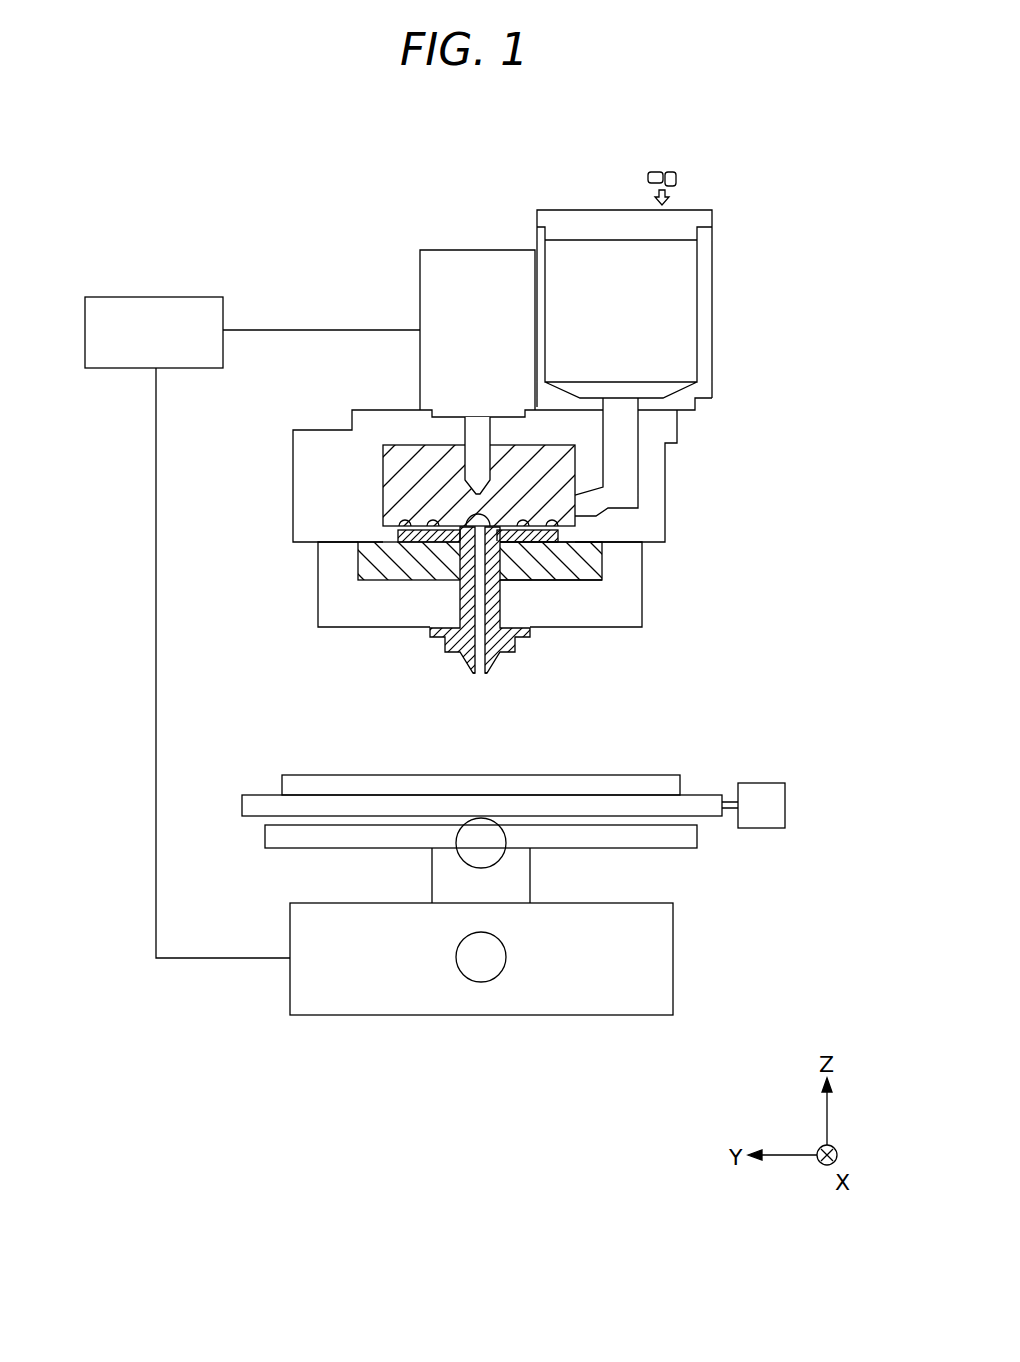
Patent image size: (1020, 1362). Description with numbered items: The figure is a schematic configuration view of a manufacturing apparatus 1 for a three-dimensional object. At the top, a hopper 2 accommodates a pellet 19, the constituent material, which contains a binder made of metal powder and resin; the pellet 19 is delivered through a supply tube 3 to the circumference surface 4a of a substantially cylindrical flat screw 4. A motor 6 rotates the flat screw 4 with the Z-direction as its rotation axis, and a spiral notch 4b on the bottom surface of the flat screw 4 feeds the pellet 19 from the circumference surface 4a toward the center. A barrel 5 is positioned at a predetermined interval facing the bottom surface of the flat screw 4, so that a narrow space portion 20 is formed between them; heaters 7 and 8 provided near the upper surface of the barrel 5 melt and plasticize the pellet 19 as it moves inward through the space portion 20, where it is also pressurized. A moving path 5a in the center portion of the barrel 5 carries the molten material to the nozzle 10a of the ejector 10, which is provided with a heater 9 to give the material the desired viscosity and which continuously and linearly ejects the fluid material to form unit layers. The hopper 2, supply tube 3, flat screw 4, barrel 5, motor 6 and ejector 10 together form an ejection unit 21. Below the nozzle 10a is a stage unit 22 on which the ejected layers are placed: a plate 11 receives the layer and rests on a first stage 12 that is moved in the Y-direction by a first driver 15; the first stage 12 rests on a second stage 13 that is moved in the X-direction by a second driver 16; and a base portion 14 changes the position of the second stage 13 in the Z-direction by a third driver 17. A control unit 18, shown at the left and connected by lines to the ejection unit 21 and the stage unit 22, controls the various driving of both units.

The manufacturing apparatus 1 is at (778, 142).
The hopper 2 is at (623, 260).
The supply tube 3 is at (623, 460).
The flat screw 4 is at (448, 368).
The circumference surface 4a is at (570, 520).
The notch 4b is at (462, 516).
The barrel 5 is at (365, 552).
The moving path 5a is at (560, 572).
The motor 6 is at (472, 280).
The heater 7 is at (550, 553).
The heater 8 is at (418, 565).
The heater 9 is at (451, 623).
The ejector 10 is at (451, 623).
The nozzle 10a is at (480, 675).
The plate 11 is at (317, 773).
The first stage 12 is at (372, 805).
The second stage 13 is at (305, 838).
The base portion 14 is at (600, 983).
The first driver 15 is at (762, 810).
The second driver 16 is at (487, 843).
The third driver 17 is at (479, 963).
The control unit 18 is at (156, 315).
The pellet 19 is at (672, 172).
The space portion 20 is at (488, 520).
The ejection unit 21 is at (740, 359).
The stage unit 22 is at (712, 975).